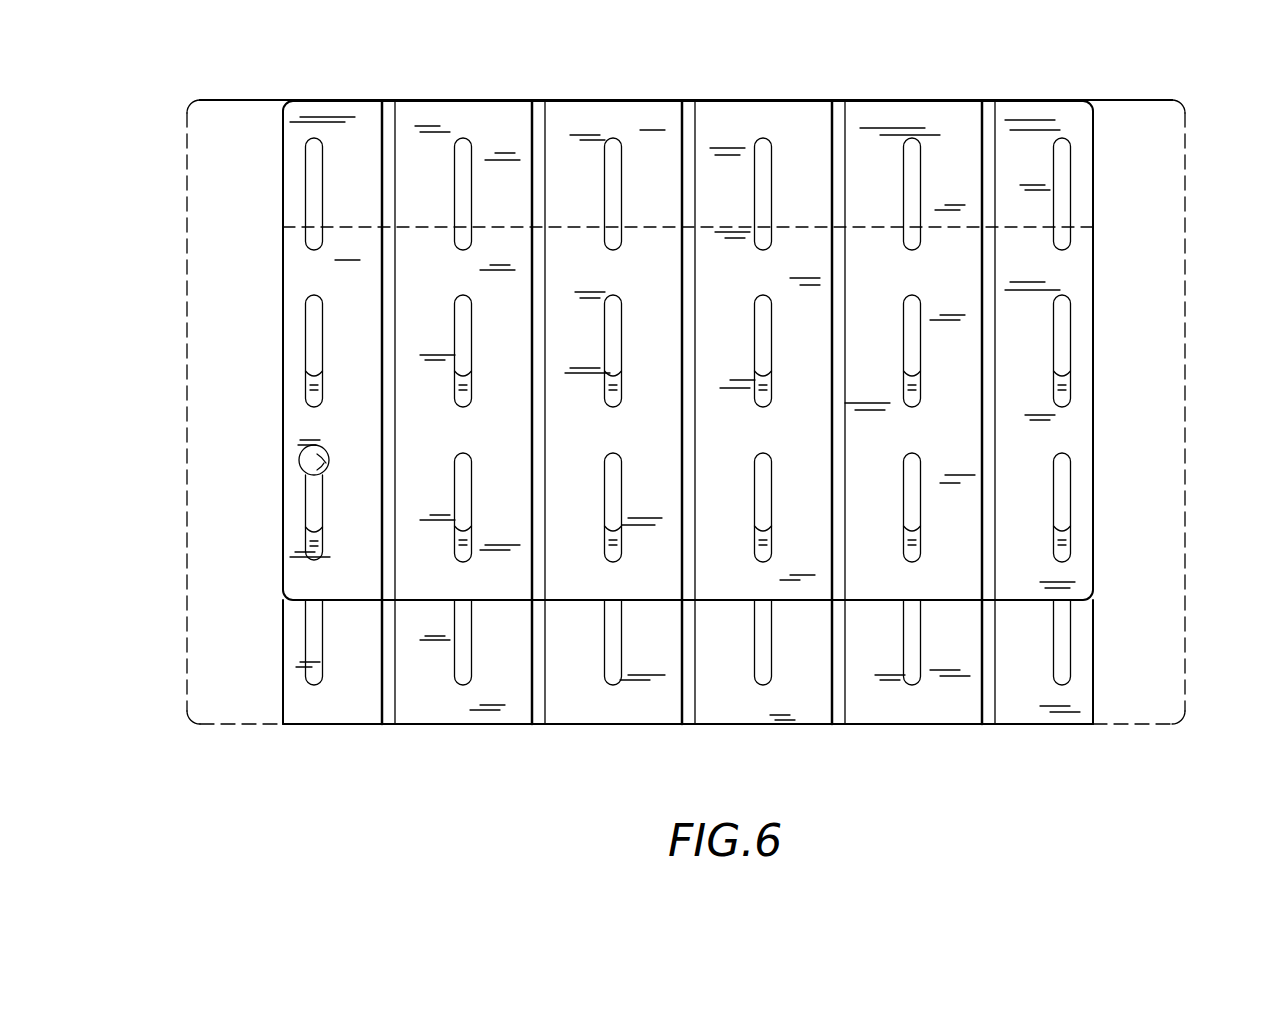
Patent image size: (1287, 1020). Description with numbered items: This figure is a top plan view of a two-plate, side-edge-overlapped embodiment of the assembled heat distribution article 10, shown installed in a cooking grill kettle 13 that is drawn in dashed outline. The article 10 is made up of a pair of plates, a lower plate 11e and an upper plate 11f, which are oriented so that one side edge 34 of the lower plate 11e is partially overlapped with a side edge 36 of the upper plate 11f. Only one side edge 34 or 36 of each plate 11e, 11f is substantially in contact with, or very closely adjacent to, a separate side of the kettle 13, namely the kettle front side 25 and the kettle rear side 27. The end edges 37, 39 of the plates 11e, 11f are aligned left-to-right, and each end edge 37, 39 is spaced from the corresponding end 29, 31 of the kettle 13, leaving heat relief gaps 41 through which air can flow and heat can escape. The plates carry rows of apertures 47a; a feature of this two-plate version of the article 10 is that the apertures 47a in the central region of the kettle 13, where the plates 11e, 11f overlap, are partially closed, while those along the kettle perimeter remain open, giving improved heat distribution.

The heat distribution article 10 is at (877, 88).
The lower plate 11e is at (903, 716).
The upper plate 11f is at (752, 115).
The kettle 13 is at (1118, 100).
The kettle front side 25 is at (267, 100).
The kettle rear side 27 is at (279, 726).
The kettle end 29 is at (189, 206).
The kettle end 31 is at (1185, 233).
The side edge 34 is at (454, 100).
The side edge 36 is at (468, 725).
The end edge 37 is at (282, 348).
The end edge 39 is at (1094, 333).
The heat relief gap 41 is at (208, 450).
The aperture 47a is at (464, 504).